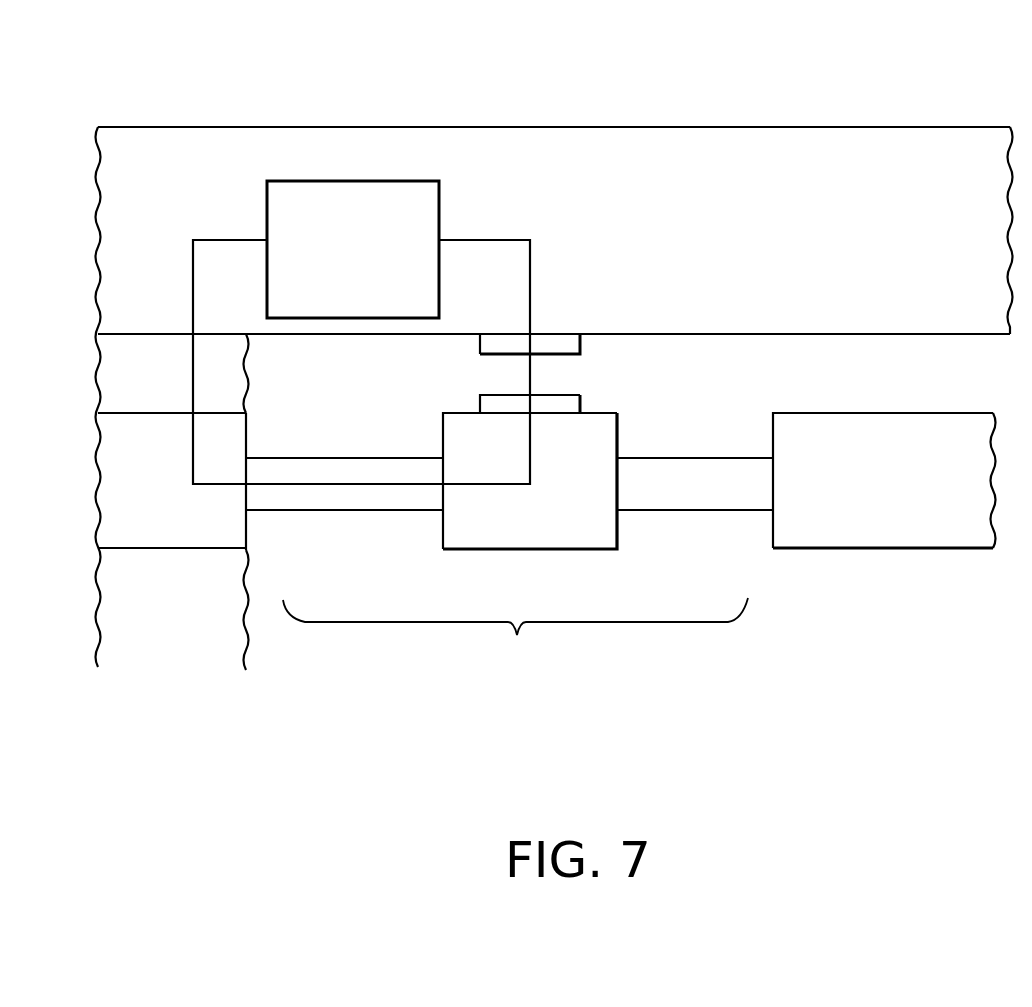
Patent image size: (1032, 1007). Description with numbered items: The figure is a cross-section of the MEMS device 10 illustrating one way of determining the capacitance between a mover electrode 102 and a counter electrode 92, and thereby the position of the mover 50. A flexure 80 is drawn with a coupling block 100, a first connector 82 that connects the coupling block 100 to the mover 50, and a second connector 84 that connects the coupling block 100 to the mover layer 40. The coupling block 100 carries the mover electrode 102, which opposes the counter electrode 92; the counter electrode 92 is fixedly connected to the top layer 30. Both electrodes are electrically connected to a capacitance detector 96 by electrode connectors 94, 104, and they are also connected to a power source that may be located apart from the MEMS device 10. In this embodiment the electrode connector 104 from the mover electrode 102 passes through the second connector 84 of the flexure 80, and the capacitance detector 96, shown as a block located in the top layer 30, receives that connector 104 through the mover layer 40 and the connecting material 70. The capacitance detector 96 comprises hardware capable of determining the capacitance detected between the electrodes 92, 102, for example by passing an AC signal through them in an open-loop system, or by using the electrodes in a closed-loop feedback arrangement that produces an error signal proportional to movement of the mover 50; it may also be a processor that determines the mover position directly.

The MEMS device 10 is at (311, 70).
The top layer 30 is at (158, 186).
The mover layer 40 is at (128, 476).
The mover 50 is at (884, 482).
The connecting material 70 is at (128, 376).
The flexure 80 is at (515, 634).
The first connector 82 is at (683, 478).
The second connector 84 is at (345, 472).
The counter electrode 92 is at (491, 347).
The electrode connector 94 is at (479, 240).
The capacitance detector 96 is at (368, 292).
The coupling block 100 is at (600, 513).
The mover electrode 102 is at (571, 402).
The electrode connector 104 is at (216, 240).